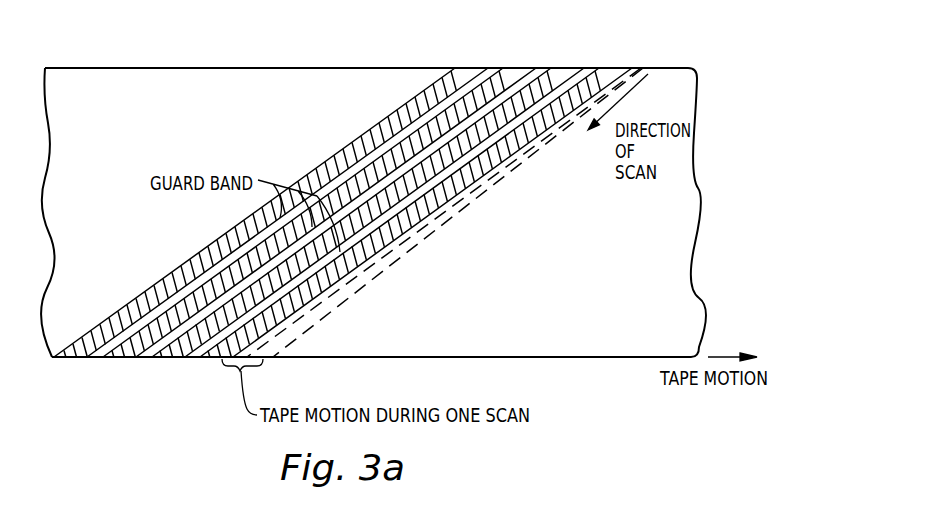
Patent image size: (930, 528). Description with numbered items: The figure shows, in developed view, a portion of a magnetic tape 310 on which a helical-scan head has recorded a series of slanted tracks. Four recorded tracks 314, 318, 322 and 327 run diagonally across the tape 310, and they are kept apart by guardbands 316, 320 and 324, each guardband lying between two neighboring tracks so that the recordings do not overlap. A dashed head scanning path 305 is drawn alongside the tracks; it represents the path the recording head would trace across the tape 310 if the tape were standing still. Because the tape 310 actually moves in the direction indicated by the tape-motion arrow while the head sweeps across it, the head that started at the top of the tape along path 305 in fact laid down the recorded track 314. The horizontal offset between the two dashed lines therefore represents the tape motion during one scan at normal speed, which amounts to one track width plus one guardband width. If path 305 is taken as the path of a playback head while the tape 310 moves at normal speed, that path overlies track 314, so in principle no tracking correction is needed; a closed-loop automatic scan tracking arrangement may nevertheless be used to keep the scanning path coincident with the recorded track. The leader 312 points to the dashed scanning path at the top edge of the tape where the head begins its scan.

The tape 310 is at (87, 76).
The recorded track 327 is at (271, 220).
The recorded track 322 is at (319, 212).
The recorded track 318 is at (368, 220).
The recorded track 314 is at (627, 68).
The guardband 324 is at (82, 358).
The guardband 320 is at (137, 358).
The guardband 316 is at (187, 358).
The head scanning path 312 is at (492, 205).
The head scanning path 305 is at (250, 368).